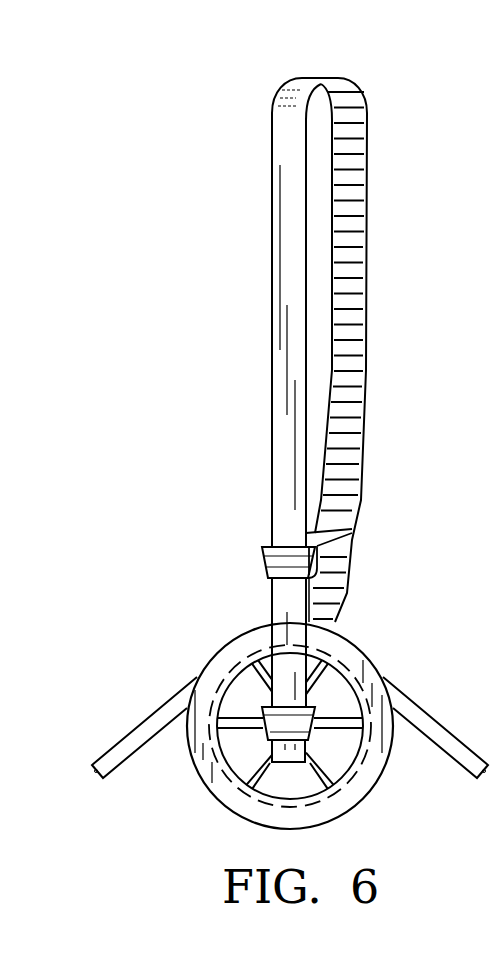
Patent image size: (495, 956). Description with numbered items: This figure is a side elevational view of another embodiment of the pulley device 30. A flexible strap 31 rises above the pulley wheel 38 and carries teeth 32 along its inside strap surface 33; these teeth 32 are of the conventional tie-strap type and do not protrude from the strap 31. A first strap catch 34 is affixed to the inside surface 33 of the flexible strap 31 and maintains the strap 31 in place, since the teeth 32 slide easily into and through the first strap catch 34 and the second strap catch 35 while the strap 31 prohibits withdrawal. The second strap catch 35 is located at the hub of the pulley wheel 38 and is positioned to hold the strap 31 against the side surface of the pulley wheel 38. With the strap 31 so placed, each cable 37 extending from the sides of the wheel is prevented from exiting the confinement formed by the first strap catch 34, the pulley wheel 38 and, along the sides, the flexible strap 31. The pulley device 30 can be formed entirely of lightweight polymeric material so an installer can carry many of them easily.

The pulley device 30 is at (199, 99).
The flexible strap 31 is at (282, 248).
The teeth 32 is at (347, 327).
The inside strap surface 33 is at (355, 197).
The first strap catch 34 is at (250, 545).
The second strap catch 35 is at (320, 743).
The cable 37 is at (146, 695).
The pulley wheel 38 is at (233, 830).